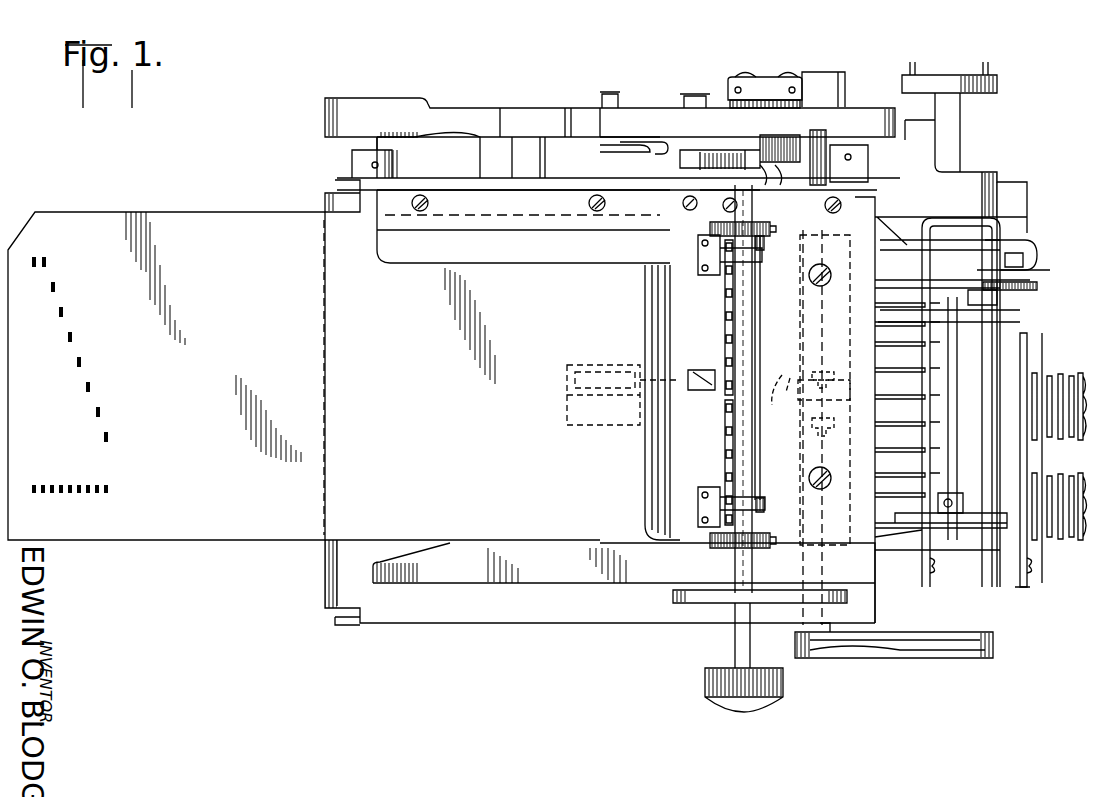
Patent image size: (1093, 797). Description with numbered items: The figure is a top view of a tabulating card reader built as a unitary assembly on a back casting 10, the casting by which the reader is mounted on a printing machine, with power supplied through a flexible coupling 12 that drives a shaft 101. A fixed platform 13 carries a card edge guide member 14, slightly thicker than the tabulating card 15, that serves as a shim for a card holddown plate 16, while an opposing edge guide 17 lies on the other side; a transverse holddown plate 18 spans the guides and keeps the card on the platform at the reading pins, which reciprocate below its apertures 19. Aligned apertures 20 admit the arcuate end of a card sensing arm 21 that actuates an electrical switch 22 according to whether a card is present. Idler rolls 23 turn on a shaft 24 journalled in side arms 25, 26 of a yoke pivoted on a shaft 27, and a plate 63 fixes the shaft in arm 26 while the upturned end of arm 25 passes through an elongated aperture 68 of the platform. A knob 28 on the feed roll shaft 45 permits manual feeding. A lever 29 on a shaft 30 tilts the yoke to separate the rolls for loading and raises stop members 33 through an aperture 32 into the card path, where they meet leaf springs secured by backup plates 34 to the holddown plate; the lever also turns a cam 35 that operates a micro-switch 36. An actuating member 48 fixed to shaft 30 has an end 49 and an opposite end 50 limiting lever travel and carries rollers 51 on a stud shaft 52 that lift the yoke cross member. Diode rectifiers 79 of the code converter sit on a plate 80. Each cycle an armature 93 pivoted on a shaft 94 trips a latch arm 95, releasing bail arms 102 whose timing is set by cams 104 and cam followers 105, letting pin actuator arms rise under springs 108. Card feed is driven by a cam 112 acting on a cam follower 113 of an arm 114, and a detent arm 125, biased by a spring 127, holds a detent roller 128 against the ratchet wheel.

The back casting 10 is at (462, 106).
The flexible coupling 12 is at (998, 83).
The platform 13 is at (423, 618).
The card edge guide member 14 is at (865, 205).
The tabulating card 15 is at (132, 528).
The card holddown plate 16 is at (455, 200).
The opposing edge guide 17 is at (522, 578).
The transverse holddown plate 18 is at (662, 460).
The apertures 19 is at (725, 298).
The aligned apertures 20 is at (705, 368).
The card sensing arm 21 is at (705, 388).
The electrical switch 22 is at (600, 365).
The idler rolls 23 is at (777, 231).
The shaft 24 is at (754, 308).
The side arm 25 is at (690, 603).
The side arm 26 is at (556, 186).
The shaft 27 is at (352, 146).
The knob 28 is at (785, 685).
The lever 29 is at (940, 650).
The shaft 30 is at (822, 140).
The aperture 32 is at (762, 333).
The stop members 33 is at (770, 250).
The backup plates 34 is at (716, 270).
The cam 35 is at (826, 78).
The micro-switch 36 is at (760, 80).
The feed roll shaft 45 is at (682, 202).
The actuating member 48 is at (790, 422).
The end 49 is at (796, 410).
The opposite end 50 is at (846, 370).
The rollers 51 is at (820, 370).
The stud shaft 52 is at (824, 415).
The plate 63 is at (765, 178).
The elongated aperture 68 is at (775, 590).
The diode rectifiers 79 is at (1075, 480).
The plate 80 is at (1028, 362).
The armature 93 is at (1025, 262).
The shaft 94 is at (1000, 325).
The latch arm 95 is at (1028, 236).
The shaft 101 is at (962, 112).
The bail arms 102 is at (922, 232).
The cams 104 is at (948, 255).
The cam followers 105 is at (1000, 272).
The spring 108 is at (910, 392).
The cam 112 is at (945, 305).
The cam follower 113 is at (995, 295).
The arm 114 is at (1032, 290).
The detent arm 125 is at (676, 170).
The spring 127 is at (640, 135).
The detent roller 128 is at (718, 148).